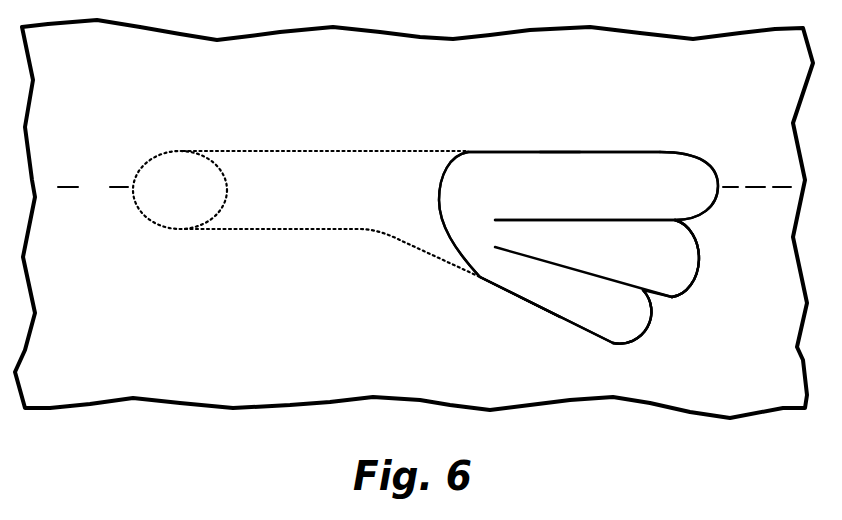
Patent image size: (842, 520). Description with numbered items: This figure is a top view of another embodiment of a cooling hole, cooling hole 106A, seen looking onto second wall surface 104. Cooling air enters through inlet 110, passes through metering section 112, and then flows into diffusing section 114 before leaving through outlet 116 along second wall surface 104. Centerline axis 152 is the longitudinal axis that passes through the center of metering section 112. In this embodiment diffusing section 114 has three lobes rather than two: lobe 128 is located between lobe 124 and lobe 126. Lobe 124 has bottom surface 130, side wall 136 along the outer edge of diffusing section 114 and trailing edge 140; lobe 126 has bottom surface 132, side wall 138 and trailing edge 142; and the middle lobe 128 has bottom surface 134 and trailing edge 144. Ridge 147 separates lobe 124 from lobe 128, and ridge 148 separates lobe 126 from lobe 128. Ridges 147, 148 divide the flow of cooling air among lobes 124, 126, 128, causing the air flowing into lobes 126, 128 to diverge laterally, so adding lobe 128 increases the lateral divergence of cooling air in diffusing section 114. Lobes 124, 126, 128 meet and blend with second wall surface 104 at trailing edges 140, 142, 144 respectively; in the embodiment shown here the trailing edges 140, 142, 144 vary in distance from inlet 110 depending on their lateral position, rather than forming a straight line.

The second wall surface 104 is at (98, 68).
The centerline axis 152 is at (90, 186).
The inlet 110 is at (178, 200).
The metering section 112 is at (302, 197).
The cooling hole 106A is at (475, 168).
The outlet 116 is at (447, 236).
The lobe 124 is at (622, 173).
The side wall 136 is at (546, 152).
The trailing edge 140 is at (713, 178).
The bottom surface 130 is at (678, 200).
The ridge 147 is at (570, 219).
The ridge 148 is at (564, 266).
The bottom surface 134 is at (680, 257).
The trailing edge 144 is at (702, 268).
The lobe 128 is at (672, 282).
The bottom surface 132 is at (635, 318).
The trailing edge 142 is at (645, 330).
The lobe 126 is at (582, 310).
The diffusing section 114 is at (501, 278).
The side wall 138 is at (539, 299).